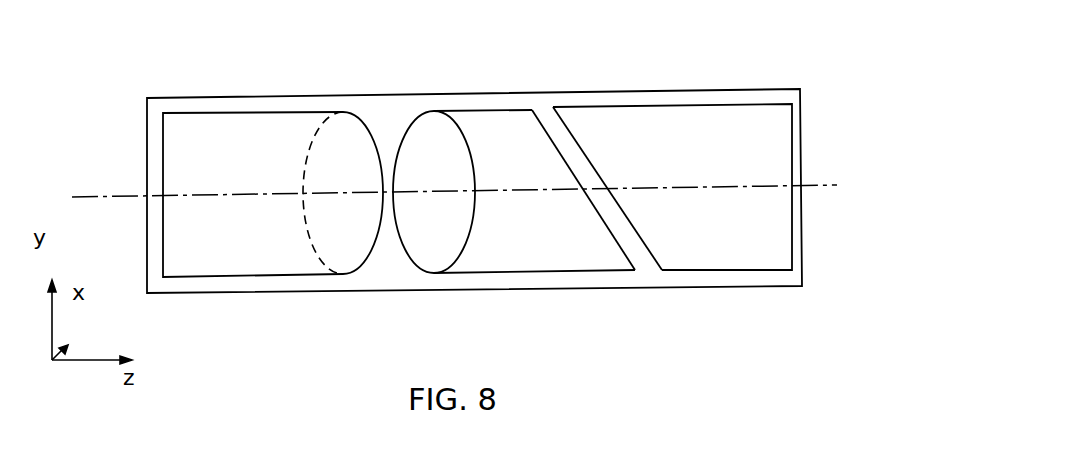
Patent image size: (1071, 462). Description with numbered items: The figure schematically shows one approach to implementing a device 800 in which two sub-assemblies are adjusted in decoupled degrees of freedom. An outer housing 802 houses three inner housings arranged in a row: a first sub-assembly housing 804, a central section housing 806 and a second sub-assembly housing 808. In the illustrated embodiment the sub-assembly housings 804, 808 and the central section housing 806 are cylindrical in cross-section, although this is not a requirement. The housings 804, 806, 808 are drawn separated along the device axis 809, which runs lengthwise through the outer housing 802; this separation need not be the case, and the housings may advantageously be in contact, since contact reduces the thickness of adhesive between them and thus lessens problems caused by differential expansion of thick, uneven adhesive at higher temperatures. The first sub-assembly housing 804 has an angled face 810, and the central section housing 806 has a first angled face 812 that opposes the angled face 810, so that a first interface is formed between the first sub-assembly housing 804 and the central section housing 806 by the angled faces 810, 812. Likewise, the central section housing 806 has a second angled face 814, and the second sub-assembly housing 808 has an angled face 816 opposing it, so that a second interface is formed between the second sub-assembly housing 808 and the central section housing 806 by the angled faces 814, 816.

The device 800 is at (840, 48).
The outer housing 802 is at (668, 92).
The first sub-assembly housing 804 is at (207, 115).
The central section housing 806 is at (533, 272).
The second sub-assembly housing 808 is at (727, 272).
The device axis 809 is at (108, 197).
The angled face 810 is at (371, 133).
The first angled face 812 is at (437, 151).
The second angled face 814 is at (538, 112).
The angled face 816 is at (647, 263).